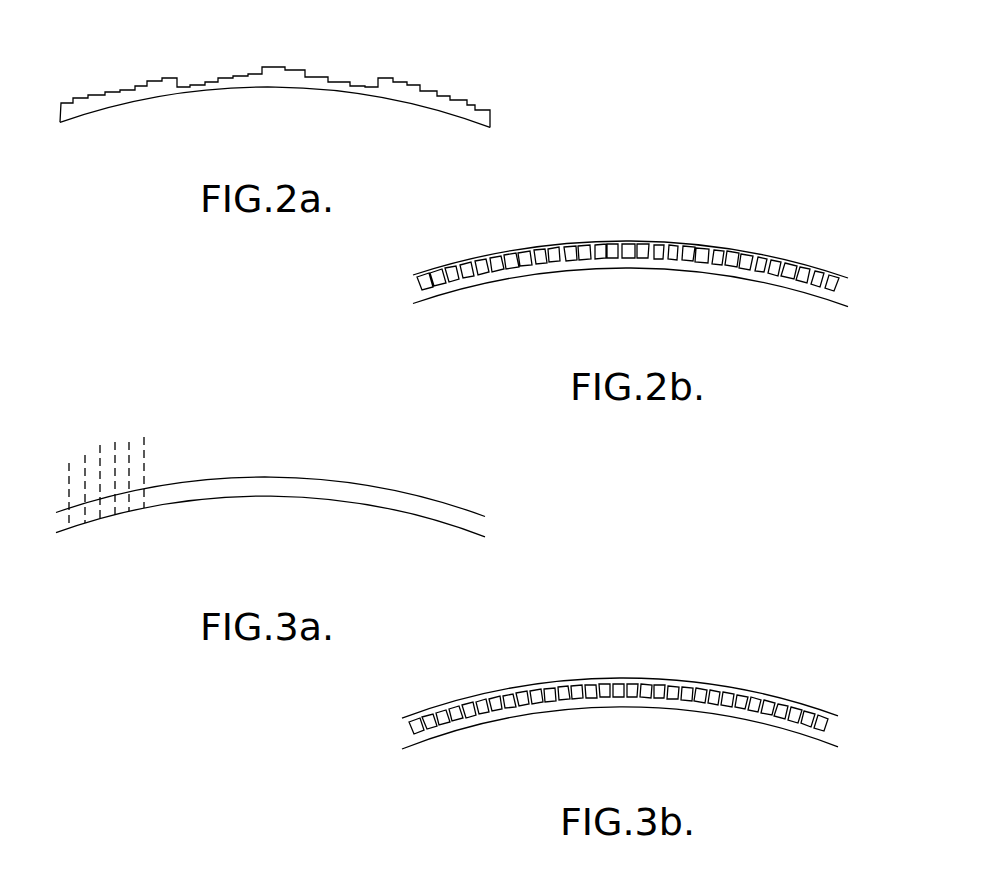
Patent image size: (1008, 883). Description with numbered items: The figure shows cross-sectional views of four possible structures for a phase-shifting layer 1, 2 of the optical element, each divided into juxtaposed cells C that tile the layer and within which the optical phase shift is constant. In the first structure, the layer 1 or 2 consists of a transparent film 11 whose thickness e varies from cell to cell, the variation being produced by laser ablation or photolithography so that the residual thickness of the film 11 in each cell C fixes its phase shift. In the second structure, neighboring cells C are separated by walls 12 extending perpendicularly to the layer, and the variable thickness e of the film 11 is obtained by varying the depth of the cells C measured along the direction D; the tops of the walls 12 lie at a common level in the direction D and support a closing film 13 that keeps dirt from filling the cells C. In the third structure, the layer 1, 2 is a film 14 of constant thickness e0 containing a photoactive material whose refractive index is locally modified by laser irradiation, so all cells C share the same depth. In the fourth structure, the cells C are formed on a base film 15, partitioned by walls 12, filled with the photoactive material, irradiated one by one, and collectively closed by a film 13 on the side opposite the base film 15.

In FIG. 2A, the layer 1 is at (275, 120).
In FIG. 2B, the layer 1 is at (630, 298).
In FIG. 3A, the layer 1 is at (270, 510).
In FIG. 3B, the layer 1 is at (620, 727).
In FIG. 2A, the layer 2 is at (275, 120).
In FIG. 2B, the layer 2 is at (630, 298).
In FIG. 3A, the layer 2 is at (270, 510).
In FIG. 3B, the layer 2 is at (620, 727).
In FIG. 2A, the transparent film 11 is at (425, 100).
In FIG. 2B, the transparent film 11 is at (772, 287).
In FIG. 2B, the wall 12 is at (715, 247).
In FIG. 3B, the wall 12 is at (708, 693).
In FIG. 2B, the closing film 13 is at (792, 260).
In FIG. 3B, the closing film 13 is at (793, 700).
In FIG. 3A, the film 14 is at (388, 501).
In FIG. 3B, the base film 15 is at (757, 723).
In FIG. 2A, the cells C is at (382, 78).
In FIG. 2B, the cells C is at (725, 268).
In FIG. 3A, the cells C is at (142, 440).
In FIG. 3B, the cells C is at (557, 698).
In FIG. 2A, the direction D is at (517, 185).
In FIG. 2B, the direction D is at (400, 320).
In FIG. 3A, the direction D is at (501, 573).
In FIG. 3B, the direction D is at (387, 800).
In FIG. 2A, the thickness e is at (138, 127).
In FIG. 2B, the thickness e is at (463, 305).
In FIG. 3A, the thickness e0 is at (215, 515).